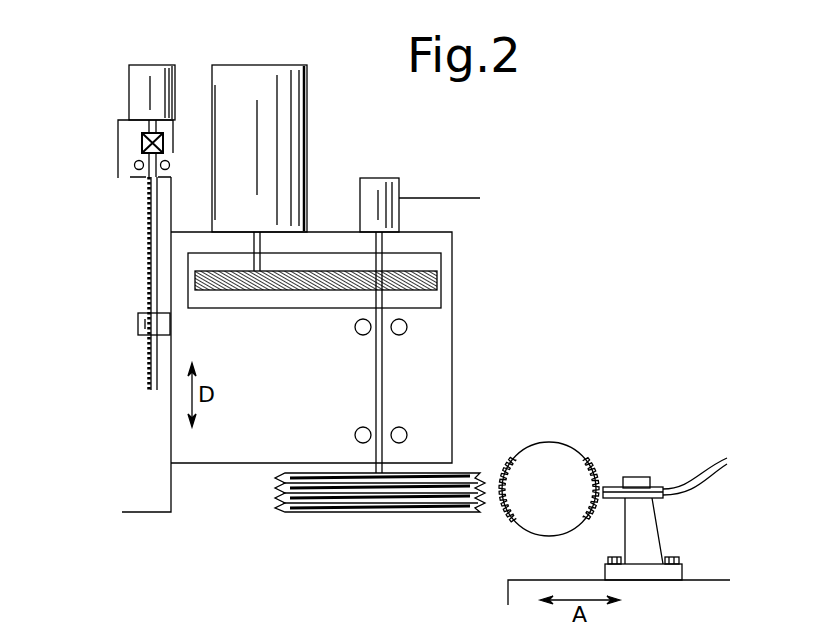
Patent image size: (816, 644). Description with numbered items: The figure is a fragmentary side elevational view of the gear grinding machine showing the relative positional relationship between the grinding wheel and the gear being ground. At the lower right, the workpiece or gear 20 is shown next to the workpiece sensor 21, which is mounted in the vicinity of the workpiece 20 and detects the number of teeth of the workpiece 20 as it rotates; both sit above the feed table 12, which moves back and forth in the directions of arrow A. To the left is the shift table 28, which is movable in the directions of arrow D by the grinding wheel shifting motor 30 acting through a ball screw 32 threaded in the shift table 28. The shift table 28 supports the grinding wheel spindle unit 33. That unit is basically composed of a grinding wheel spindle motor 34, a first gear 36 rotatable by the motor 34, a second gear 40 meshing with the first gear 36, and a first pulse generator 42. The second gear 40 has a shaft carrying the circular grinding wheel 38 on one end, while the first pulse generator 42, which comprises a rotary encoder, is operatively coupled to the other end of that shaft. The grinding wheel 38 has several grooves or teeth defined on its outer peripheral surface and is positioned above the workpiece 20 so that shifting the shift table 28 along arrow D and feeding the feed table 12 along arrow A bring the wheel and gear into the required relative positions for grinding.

The feed table 12 is at (675, 618).
The workpiece or gear 20 is at (569, 460).
The workpiece sensor 21 is at (640, 477).
The shift table 28 is at (430, 367).
The grinding wheel shifting motor 30 is at (142, 80).
The ball screw 32 is at (147, 217).
The grinding wheel spindle unit 33 is at (312, 122).
The grinding wheel spindle motor 34 is at (288, 95).
The first gear 36 is at (287, 290).
The grinding wheel 38 is at (365, 512).
The second gear 40 is at (437, 283).
The first pulse generator 42 is at (380, 178).